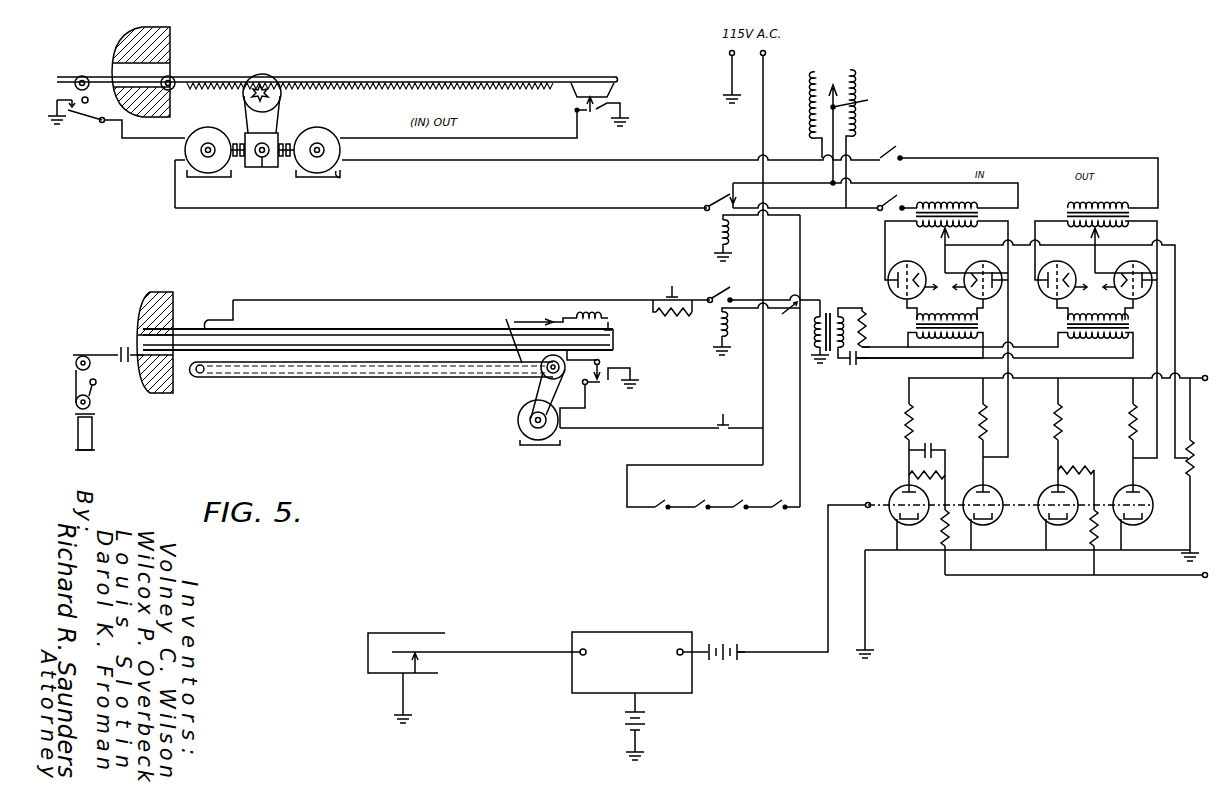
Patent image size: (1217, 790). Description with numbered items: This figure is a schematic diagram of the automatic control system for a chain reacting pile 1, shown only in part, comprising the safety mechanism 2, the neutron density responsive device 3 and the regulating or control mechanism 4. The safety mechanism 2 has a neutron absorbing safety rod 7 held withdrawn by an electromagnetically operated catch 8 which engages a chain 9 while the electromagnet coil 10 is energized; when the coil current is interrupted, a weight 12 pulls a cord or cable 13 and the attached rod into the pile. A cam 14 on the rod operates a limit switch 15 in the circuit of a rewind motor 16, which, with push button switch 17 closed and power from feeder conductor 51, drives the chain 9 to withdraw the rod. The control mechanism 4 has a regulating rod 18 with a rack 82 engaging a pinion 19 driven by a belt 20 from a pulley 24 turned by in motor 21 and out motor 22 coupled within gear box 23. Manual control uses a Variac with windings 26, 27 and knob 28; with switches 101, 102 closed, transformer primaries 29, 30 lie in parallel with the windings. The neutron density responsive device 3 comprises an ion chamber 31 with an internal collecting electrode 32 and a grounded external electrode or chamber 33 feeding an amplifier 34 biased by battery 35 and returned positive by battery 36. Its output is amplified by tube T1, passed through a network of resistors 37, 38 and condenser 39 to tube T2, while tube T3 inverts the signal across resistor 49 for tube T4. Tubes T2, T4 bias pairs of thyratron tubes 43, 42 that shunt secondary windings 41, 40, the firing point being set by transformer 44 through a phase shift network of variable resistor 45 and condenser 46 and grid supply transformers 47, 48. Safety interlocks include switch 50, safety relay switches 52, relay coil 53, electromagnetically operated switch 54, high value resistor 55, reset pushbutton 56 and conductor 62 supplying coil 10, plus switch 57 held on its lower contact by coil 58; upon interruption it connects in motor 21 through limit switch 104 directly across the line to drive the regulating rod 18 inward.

The pile 1 is at (126, 40).
The safety mechanism 2 is at (376, 404).
The neutron density responsive device 3 is at (505, 595).
The regulating or control mechanism 4 is at (390, 66).
The safety rod 7 is at (180, 336).
The electromagnetically operated catch 8 is at (523, 352).
The chain 9 is at (436, 380).
The electromagnet coil 10 is at (588, 316).
The weight 12 is at (97, 433).
The cord or cable 13 is at (117, 352).
The cam 14 is at (600, 352).
The limit switch 15 is at (597, 386).
The rewind motor 16 is at (520, 424).
The push button switch 17 is at (719, 424).
The regulating rod 18 is at (178, 76).
The pinion 19 is at (275, 94).
The belt 20 is at (246, 116).
The in motor 21 is at (185, 150).
The out motor 22 is at (335, 136).
The gear box 23 is at (253, 167).
The pulley 24 is at (277, 167).
The Variac winding 26 is at (810, 73).
The Variac winding 27 is at (857, 80).
The Variac knob 28 is at (865, 135).
The transformer primary 29 is at (1064, 208).
The transformer primary 30 is at (984, 209).
The ion chamber 31 is at (418, 620).
The internal collecting electrode 32 is at (425, 651).
The external electrode or chamber 33 is at (382, 674).
The amplifier 34 is at (646, 632).
The battery 35 is at (655, 726).
The battery 36 is at (720, 670).
The resistor 37 is at (912, 474).
The resistor 38 is at (942, 538).
The condenser 39 is at (932, 446).
The secondary winding 40 is at (1122, 229).
The secondary winding 41 is at (941, 236).
The thyratron tubes 42 is at (1071, 272).
The thyratron tubes 43 is at (921, 272).
The transformer 44 is at (836, 312).
The variable resistor 45 is at (864, 313).
The condenser 46 is at (851, 368).
The grid supply transformer 47 is at (995, 336).
The grid supply transformer 48 is at (980, 325).
The resistor 49 is at (1080, 468).
The manually operated switch 50 is at (783, 318).
The feeder conductor 51 is at (766, 129).
The safety relay switches 52 is at (704, 512).
The relay coil 53 is at (726, 330).
The electromagnetically operated switch 54 is at (725, 292).
The resistor 55 is at (675, 317).
The reset pushbutton 56 is at (670, 287).
The switch 57 is at (716, 201).
The coil 58 is at (718, 225).
The conductor 62 is at (378, 329).
The rack 82 is at (503, 88).
The manually controlled switch 101 is at (898, 153).
The manually controlled switch 102 is at (881, 198).
The limit switch 104 is at (74, 125).
The vacuum tube T1 is at (896, 495).
The vacuum tube T2 is at (997, 493).
The vacuum tube T3 is at (1045, 520).
The vacuum tube T4 is at (1148, 520).